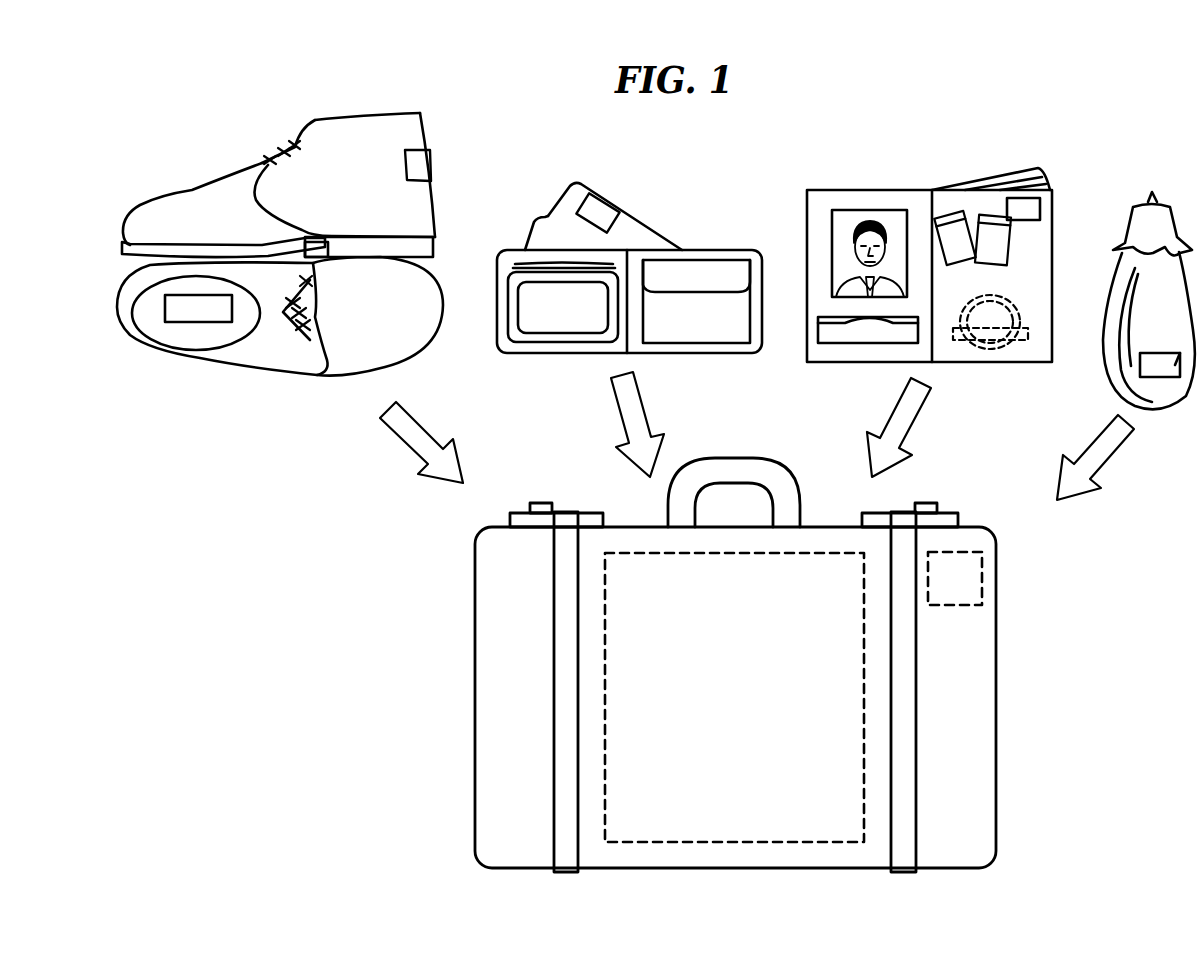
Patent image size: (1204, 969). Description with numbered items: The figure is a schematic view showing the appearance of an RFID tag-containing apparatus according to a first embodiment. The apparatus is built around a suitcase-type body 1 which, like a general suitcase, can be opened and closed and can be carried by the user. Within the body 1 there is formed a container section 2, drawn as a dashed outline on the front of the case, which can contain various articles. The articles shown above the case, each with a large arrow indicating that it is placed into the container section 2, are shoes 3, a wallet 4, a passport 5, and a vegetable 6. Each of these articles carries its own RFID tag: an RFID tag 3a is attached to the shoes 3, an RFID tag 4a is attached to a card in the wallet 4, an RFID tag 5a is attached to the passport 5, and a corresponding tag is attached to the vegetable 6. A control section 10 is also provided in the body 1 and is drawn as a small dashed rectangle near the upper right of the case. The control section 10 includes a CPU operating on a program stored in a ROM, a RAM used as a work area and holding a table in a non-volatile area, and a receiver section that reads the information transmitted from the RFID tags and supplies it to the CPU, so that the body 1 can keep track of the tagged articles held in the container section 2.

The suitcase-type body 1 is at (996, 693).
The container section 2 is at (813, 560).
The control section 10 is at (985, 575).
The shoes 3 is at (243, 133).
The RFID tag 3a is at (432, 161).
The wallet 4 is at (690, 212).
The RFID tag 4a is at (605, 209).
The passport 5 is at (922, 156).
The RFID tag 5a is at (1022, 198).
The vegetable 6 is at (1118, 185).